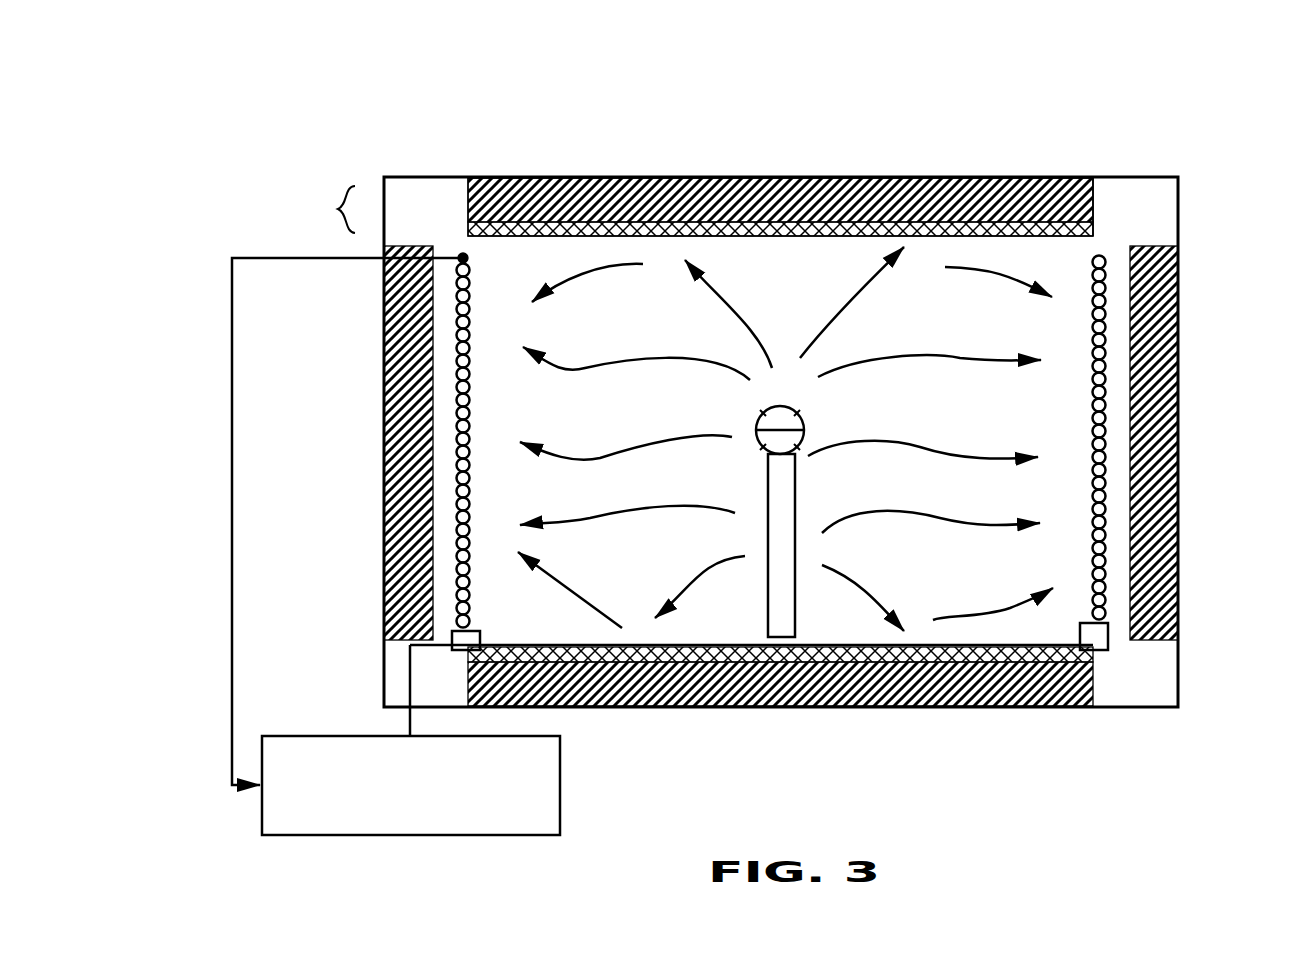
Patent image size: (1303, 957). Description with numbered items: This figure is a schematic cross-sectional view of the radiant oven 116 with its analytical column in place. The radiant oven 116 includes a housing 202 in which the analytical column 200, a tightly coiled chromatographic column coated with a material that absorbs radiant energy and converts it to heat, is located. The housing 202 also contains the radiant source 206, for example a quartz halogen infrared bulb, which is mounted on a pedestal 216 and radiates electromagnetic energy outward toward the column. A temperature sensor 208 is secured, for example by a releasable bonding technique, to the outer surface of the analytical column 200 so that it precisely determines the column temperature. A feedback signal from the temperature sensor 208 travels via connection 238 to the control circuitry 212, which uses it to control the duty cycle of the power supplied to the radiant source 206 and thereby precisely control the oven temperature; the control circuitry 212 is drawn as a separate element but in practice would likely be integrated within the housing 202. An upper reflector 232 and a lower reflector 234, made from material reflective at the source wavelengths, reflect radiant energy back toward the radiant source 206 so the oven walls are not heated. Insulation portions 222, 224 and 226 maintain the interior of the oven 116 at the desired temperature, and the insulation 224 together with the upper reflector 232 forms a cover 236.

The radiant oven 116 is at (226, 51).
The analytical column 200 is at (1100, 254).
The housing 202 is at (383, 650).
The radiant source 206 is at (757, 430).
The temperature sensor 208 is at (463, 255).
The control circuitry 212 is at (330, 825).
The pedestal 216 is at (766, 505).
The insulation portion 222 is at (403, 307).
The insulation portion 224 is at (694, 198).
The insulation portion 226 is at (957, 692).
The upper reflector 232 is at (1093, 228).
The lower reflector 234 is at (1095, 655).
The cover 236 is at (685, 207).
The connection 238 is at (316, 521).